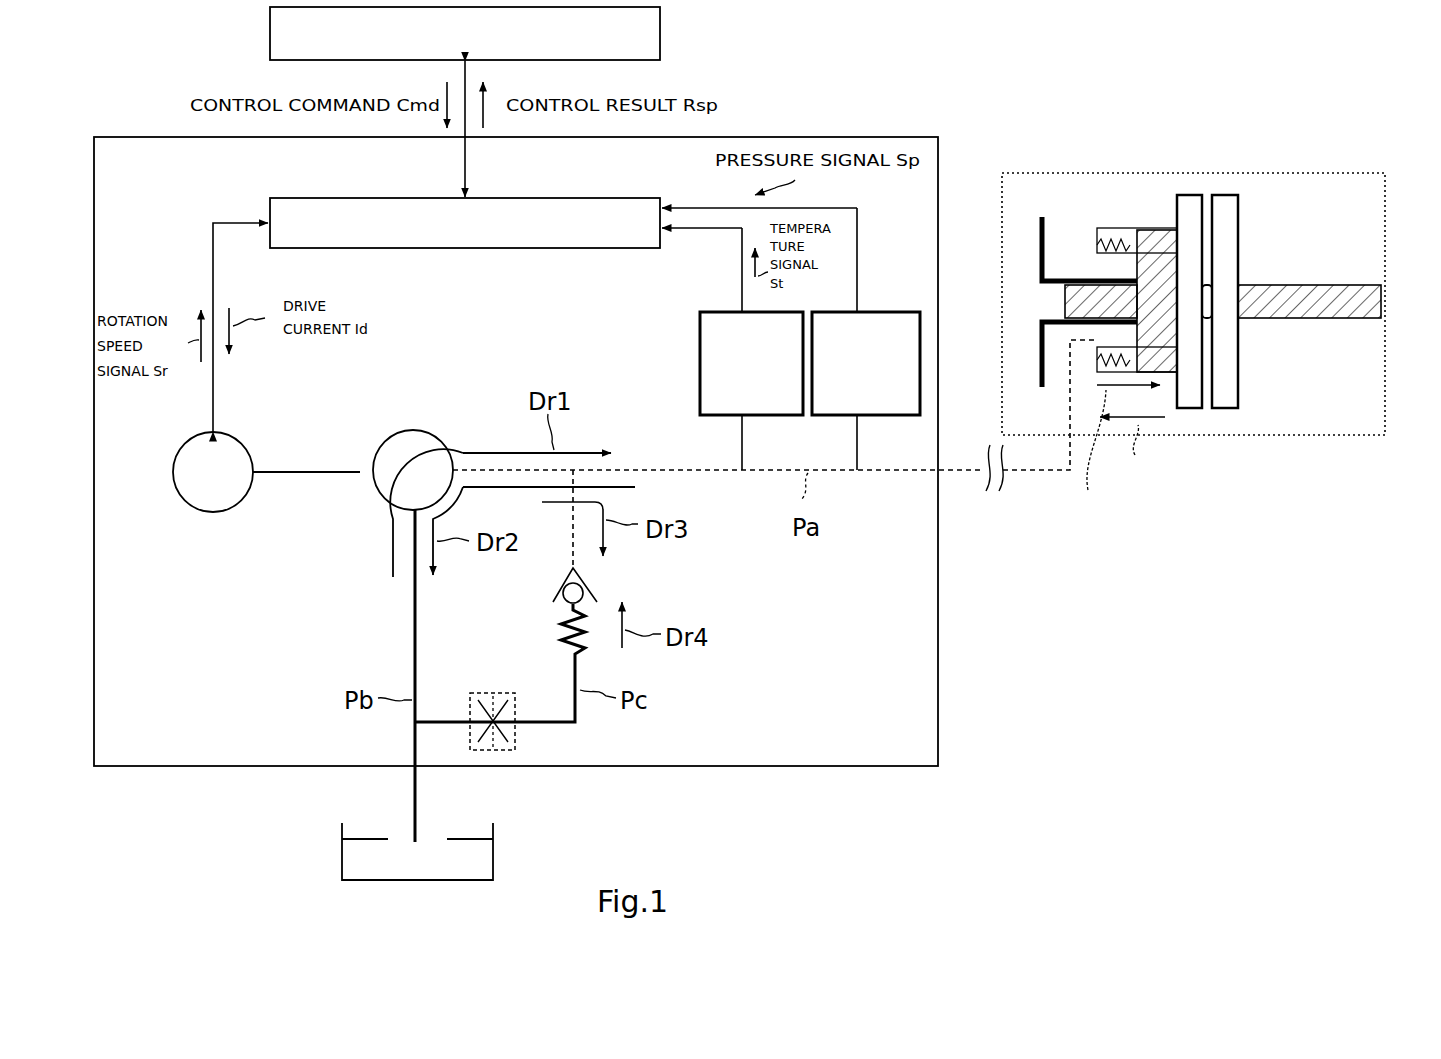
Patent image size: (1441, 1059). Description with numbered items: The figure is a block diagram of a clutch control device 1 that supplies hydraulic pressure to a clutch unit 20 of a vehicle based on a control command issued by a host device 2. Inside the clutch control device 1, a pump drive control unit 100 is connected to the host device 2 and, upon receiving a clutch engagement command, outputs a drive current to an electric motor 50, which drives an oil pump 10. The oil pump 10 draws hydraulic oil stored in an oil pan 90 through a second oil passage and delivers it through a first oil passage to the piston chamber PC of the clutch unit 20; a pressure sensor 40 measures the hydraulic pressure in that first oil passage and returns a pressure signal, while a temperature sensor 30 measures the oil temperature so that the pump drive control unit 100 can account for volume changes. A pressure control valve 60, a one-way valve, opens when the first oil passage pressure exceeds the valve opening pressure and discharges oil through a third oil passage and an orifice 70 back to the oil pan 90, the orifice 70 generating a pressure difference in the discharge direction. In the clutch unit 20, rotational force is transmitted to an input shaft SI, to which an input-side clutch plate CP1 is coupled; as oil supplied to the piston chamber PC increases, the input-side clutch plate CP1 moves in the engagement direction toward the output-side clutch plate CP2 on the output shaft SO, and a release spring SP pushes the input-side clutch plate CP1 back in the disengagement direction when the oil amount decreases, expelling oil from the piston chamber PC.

The clutch control device 1 is at (845, 137).
The host device 2 is at (660, 33).
The pump drive control unit 100 is at (618, 197).
The oil pump 10 is at (445, 438).
The electric motor 50 is at (243, 440).
The temperature sensor 30 is at (700, 352).
The pressure sensor 40 is at (880, 312).
The pressure control valve 60 is at (614, 593).
The orifice 70 is at (486, 690).
The oil pan 90 is at (493, 848).
The clutch unit 20 is at (1326, 173).
The release spring SP is at (1085, 242).
The piston chamber PC is at (1165, 228).
The input shaft SI is at (1055, 305).
The output shaft SO is at (1348, 290).
The input-side clutch plate CP1 is at (1190, 410).
The output-side clutch plate CP2 is at (1226, 410).